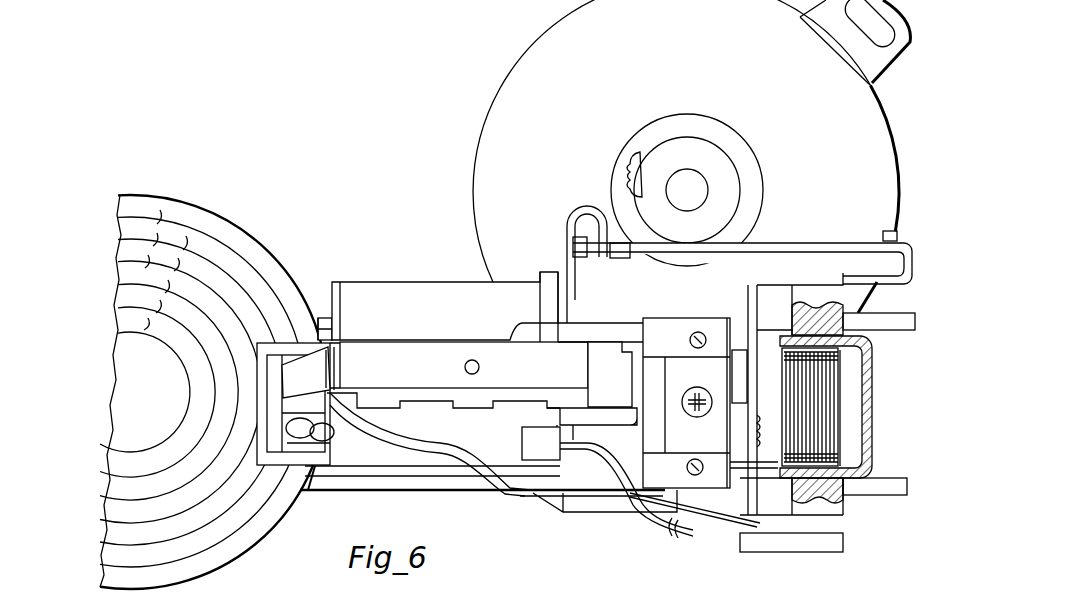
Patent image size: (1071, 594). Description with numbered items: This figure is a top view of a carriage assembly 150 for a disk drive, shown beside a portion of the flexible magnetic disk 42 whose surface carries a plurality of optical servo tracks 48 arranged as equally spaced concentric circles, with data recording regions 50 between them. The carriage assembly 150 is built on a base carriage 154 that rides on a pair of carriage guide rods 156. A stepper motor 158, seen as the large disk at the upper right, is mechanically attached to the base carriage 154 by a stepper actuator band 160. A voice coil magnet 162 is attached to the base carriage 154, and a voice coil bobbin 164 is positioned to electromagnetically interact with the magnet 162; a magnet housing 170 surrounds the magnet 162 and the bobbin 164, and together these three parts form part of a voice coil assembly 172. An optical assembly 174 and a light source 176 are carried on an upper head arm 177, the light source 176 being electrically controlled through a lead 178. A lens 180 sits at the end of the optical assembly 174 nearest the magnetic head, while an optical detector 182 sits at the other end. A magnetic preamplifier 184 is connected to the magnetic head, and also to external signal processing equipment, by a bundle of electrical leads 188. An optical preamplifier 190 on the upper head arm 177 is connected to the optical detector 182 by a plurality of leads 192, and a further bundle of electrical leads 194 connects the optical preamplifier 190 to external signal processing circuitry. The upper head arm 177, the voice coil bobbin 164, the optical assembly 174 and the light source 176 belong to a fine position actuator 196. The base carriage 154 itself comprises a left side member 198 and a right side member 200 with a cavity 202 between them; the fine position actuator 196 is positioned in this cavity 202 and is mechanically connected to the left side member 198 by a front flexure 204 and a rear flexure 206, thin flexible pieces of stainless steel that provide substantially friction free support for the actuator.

The flexible magnetic disk 42 is at (156, 199).
The optical servo tracks 48 is at (172, 222).
The data recording regions 50 is at (172, 308).
The carriage assembly 150 is at (533, 497).
The base carriage 154 is at (450, 284).
The carriage guide rods 156 is at (320, 318).
The stepper motor 158 is at (897, 122).
The stepper actuator band 160 is at (766, 243).
The voice coil magnet 162 is at (848, 387).
The voice coil bobbin 164 is at (825, 412).
The magnet housing 170 is at (872, 352).
The voice coil assembly 172 is at (873, 443).
The optical assembly 174 is at (440, 378).
The light source 176 is at (278, 420).
The upper head arm 177 is at (573, 333).
The lead 178 is at (330, 438).
The lens 180 is at (282, 376).
The optical detector 182 is at (624, 388).
The magnetic preamplifier 184 is at (810, 547).
The bundle of electrical leads 188 is at (493, 490).
The optical preamplifier 190 is at (522, 445).
The leads 192 is at (545, 422).
The bundle of electrical leads 194 is at (602, 470).
The fine position actuator 196 is at (423, 476).
The left side member 198 is at (484, 318).
The right side member 200 is at (774, 506).
The cavity 202 is at (425, 318).
The front flexure 204 is at (332, 290).
The rear flexure 206 is at (762, 300).